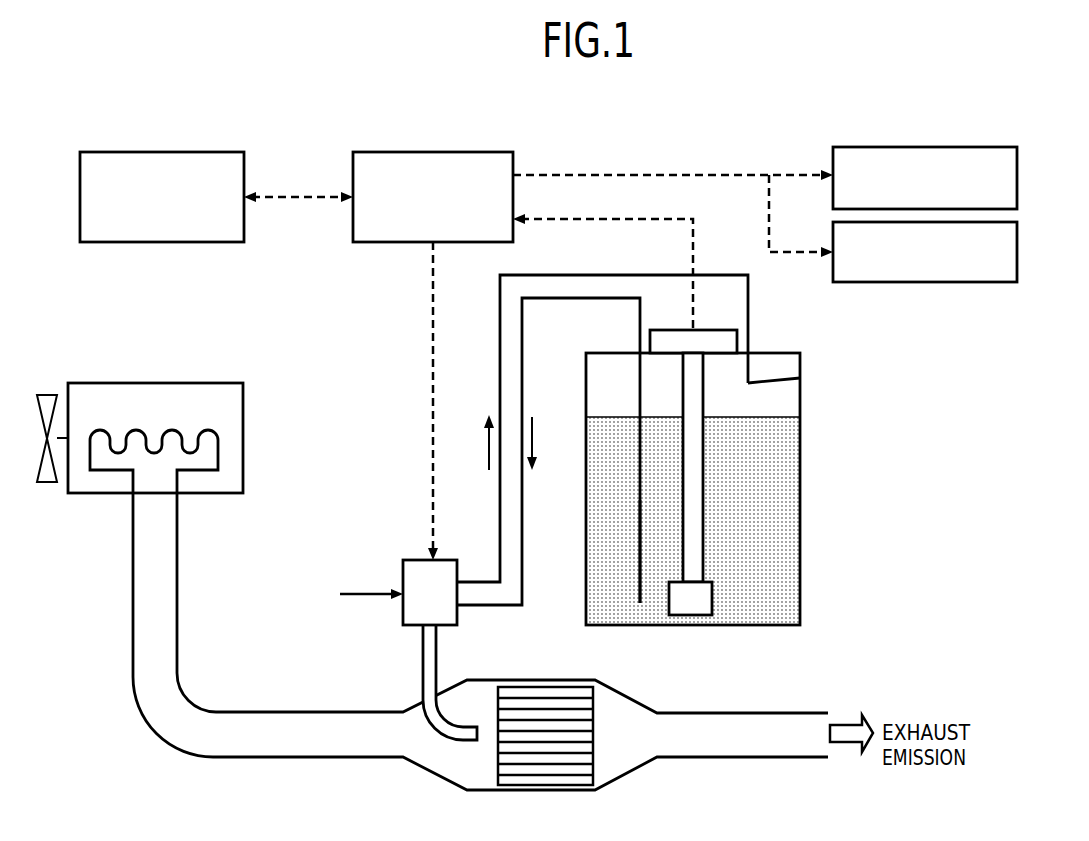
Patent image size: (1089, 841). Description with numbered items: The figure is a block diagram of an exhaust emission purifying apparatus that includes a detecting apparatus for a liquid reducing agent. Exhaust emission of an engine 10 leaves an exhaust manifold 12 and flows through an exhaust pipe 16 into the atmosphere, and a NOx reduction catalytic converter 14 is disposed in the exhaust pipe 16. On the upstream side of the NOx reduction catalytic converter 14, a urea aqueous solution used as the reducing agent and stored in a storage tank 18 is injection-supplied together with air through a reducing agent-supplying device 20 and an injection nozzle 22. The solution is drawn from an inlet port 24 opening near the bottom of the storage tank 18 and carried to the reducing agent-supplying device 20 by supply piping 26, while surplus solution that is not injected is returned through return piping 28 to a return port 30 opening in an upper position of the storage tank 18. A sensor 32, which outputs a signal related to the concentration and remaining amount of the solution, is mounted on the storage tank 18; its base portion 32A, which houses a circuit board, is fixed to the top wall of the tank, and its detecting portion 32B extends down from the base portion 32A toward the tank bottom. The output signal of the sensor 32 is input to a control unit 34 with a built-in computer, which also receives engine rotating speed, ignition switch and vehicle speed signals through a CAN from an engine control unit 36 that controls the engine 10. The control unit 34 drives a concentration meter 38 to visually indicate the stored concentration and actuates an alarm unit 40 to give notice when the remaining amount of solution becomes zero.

The engine 10 is at (177, 383).
The exhaust manifold 12 is at (218, 455).
The NOx reduction catalytic converter 14 is at (597, 715).
The exhaust pipe 16 is at (272, 712).
The storage tank 18 is at (800, 445).
The reducing agent-supplying device 20 is at (410, 557).
The injection nozzle 22 is at (471, 727).
The inlet port 24 is at (635, 603).
The supply piping 26 is at (522, 400).
The return piping 28 is at (500, 392).
The return port 30 is at (800, 378).
The sensor 32 is at (735, 454).
The base portion 32A is at (737, 343).
The detecting portion 32B is at (696, 612).
The control unit 34 is at (443, 152).
The engine control unit 36 is at (183, 152).
The concentration meter 38 is at (1017, 162).
The alarm unit 40 is at (1017, 236).